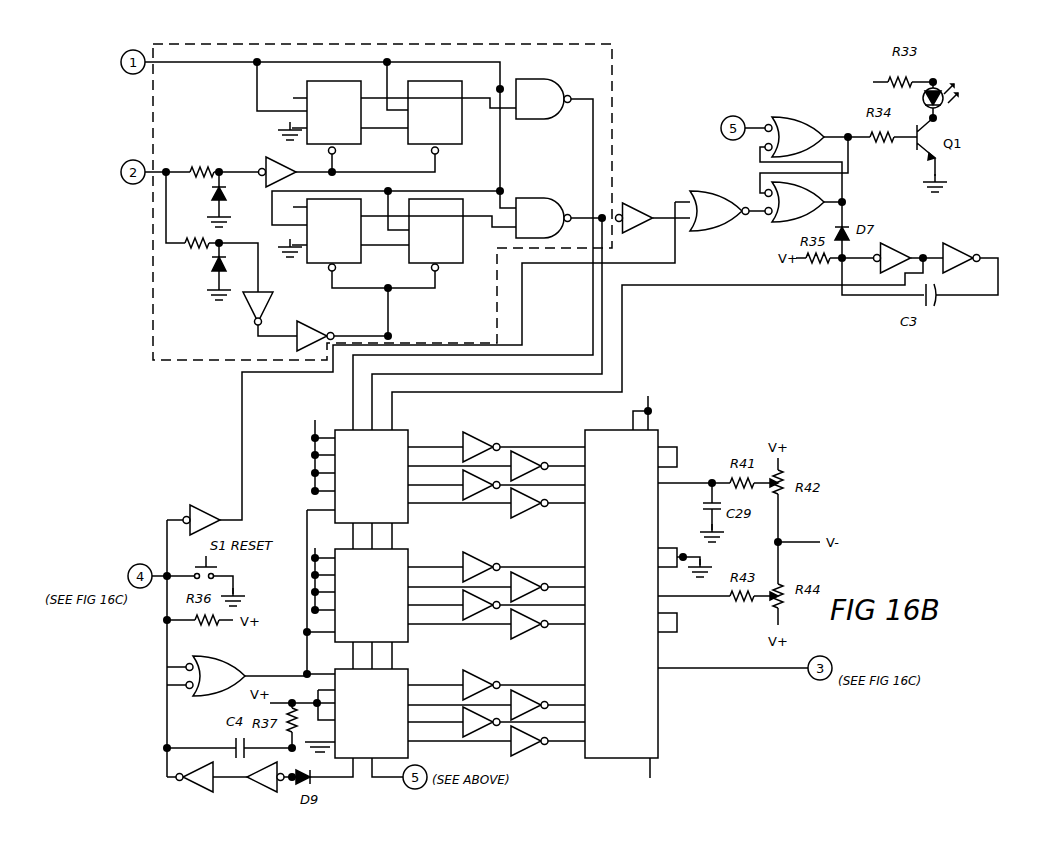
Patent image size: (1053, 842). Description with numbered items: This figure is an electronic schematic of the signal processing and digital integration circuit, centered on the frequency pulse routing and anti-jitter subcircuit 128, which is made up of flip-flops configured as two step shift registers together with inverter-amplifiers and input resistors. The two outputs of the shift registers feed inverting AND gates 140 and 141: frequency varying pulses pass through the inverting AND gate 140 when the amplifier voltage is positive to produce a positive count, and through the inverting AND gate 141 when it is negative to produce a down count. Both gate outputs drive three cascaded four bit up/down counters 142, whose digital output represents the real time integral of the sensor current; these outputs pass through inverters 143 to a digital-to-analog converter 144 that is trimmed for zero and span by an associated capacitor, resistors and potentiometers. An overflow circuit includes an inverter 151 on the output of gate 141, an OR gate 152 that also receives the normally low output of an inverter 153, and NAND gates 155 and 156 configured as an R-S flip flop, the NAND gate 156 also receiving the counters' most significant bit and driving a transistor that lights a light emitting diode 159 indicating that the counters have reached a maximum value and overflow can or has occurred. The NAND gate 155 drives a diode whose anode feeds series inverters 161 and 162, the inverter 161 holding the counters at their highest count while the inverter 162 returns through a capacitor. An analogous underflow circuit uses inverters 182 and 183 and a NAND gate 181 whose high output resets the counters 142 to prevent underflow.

The frequency pulse routing and anti-jitter subcircuit 128 is at (590, 88).
The inverting AND gate 140 is at (550, 94).
The inverting AND gate 141 is at (540, 208).
The four bit up/down counters 142 is at (357, 580).
The inverters 143 is at (522, 428).
The digital-to-analog converter 144 is at (648, 587).
The inverter 151 is at (636, 206).
The OR gate 152 is at (722, 190).
The inverter 153 is at (210, 510).
The NAND gate 155 is at (790, 218).
The NAND gate 156 is at (804, 126).
The light emitting diode 159 is at (946, 82).
The inverter 161 is at (898, 246).
The inverter 162 is at (961, 246).
The NAND gate 181 is at (228, 666).
The inverter 182 is at (262, 787).
The inverter 183 is at (198, 786).